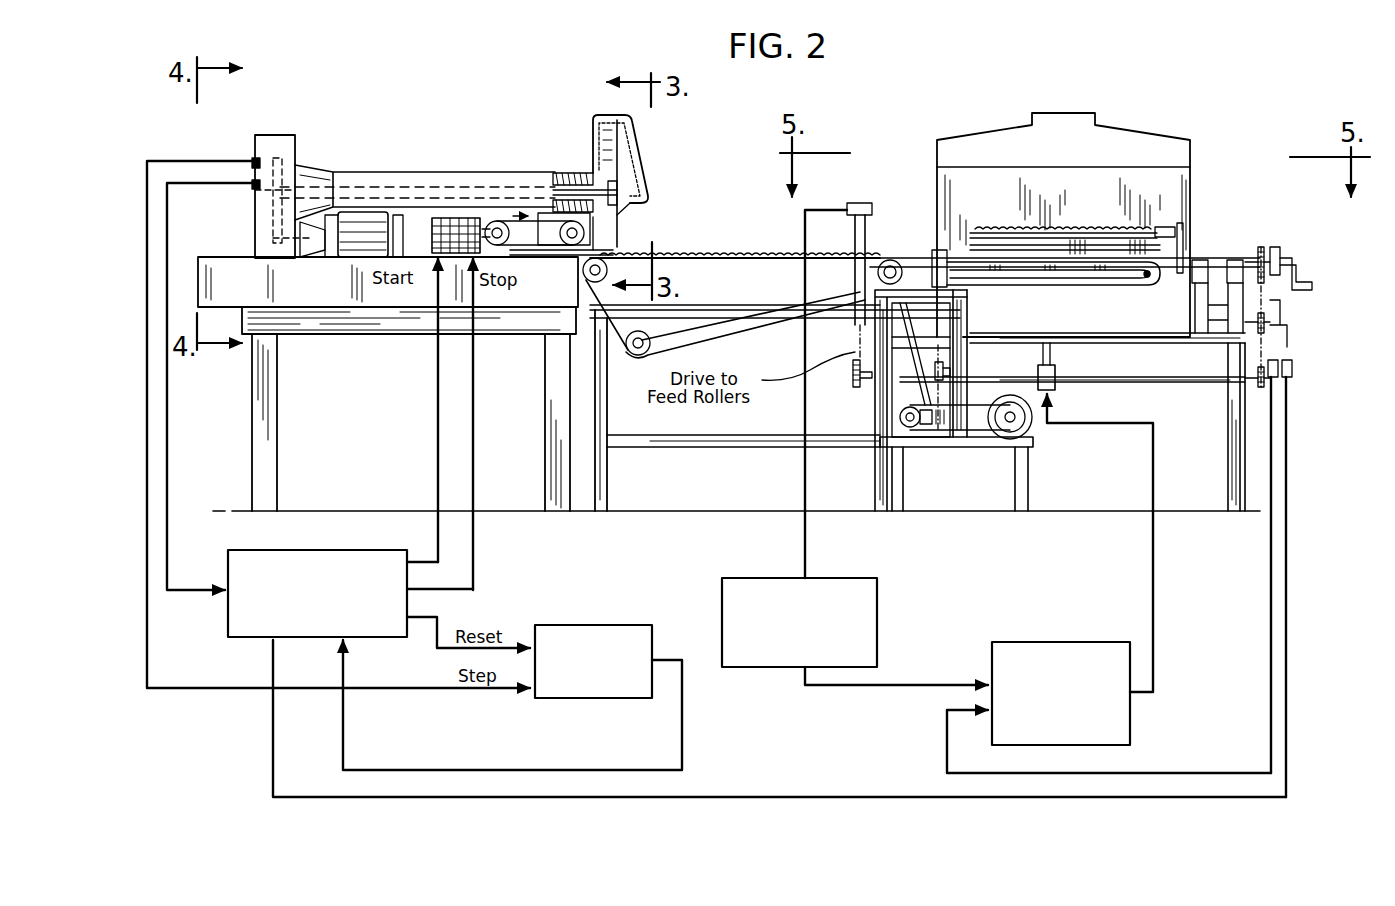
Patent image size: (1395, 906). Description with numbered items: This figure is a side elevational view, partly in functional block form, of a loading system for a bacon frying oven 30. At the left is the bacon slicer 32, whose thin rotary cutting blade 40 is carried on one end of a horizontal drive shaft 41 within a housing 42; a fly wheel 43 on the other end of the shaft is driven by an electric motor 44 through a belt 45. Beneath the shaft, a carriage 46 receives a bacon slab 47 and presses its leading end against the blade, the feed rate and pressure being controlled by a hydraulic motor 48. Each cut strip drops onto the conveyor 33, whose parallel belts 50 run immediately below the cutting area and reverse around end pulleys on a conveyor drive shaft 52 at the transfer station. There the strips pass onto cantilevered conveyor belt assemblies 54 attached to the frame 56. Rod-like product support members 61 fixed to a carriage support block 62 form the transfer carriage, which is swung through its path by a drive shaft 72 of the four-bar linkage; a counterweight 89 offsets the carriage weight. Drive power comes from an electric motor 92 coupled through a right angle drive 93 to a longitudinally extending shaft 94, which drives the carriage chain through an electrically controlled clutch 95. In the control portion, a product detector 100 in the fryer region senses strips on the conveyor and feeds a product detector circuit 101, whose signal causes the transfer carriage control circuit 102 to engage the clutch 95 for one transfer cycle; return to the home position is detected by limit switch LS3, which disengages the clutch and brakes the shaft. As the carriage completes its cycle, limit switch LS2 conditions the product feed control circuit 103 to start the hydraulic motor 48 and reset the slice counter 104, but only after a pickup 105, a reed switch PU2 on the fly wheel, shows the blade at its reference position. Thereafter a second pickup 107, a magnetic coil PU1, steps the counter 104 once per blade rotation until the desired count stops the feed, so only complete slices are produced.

The bacon frying oven 30 is at (932, 138).
The bacon slicer 32 is at (645, 128).
The conveyor 33 is at (720, 250).
The rotary cutting blade 40 is at (610, 157).
The drive shaft 41 is at (563, 193).
The housing 42 is at (641, 178).
The fly wheel 43 is at (300, 200).
The electric motor 44 is at (375, 217).
The belt 45 is at (310, 242).
The carriage 46 is at (530, 245).
The bacon slab 47 is at (552, 253).
The hydraulic motor 48 is at (452, 217).
The conveyor belts 50 is at (705, 262).
The conveyor drive shaft 52 is at (890, 260).
The cantilevered conveyor belt assemblies 54 is at (1062, 278).
The frame 56 is at (700, 448).
The product support members 61 is at (1000, 230).
The carriage support block 62 is at (1190, 226).
The drive shaft 72 is at (1252, 258).
The counterweight 89 is at (1305, 288).
The electric motor 92 is at (1030, 425).
The right angle drive 93 is at (930, 448).
The longitudinally extending shaft 94 is at (1190, 383).
The electrically controlled clutch 95 is at (1058, 385).
The product detector 100 is at (858, 203).
The product detector circuit 101 is at (877, 592).
The transfer carriage control circuit 102 is at (1040, 642).
The product feed control circuit 103 is at (284, 550).
The slice counter 104 is at (617, 625).
The pickup 105 is at (252, 193).
The second pickup 107 is at (253, 157).
The magnetic coil PU1 is at (233, 151).
The reed switch PU2 is at (233, 194).
The limit switch LS2 is at (1280, 362).
The limit switch LS3 is at (1292, 377).